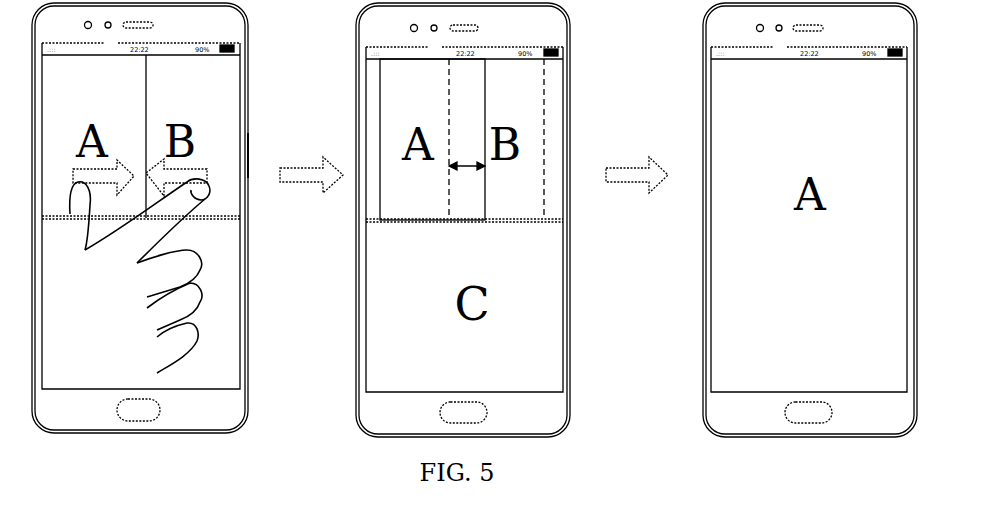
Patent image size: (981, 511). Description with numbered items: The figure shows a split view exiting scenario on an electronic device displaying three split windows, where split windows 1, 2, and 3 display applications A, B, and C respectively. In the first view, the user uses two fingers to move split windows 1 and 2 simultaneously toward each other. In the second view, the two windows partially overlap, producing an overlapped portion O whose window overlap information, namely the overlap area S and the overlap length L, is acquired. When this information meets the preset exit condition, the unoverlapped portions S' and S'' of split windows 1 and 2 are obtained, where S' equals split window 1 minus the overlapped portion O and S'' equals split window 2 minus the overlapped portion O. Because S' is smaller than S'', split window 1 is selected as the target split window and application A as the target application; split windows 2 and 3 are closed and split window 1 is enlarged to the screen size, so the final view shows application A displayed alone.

The split window 1 is at (245, 137).
The split window 2 is at (354, 135).
The split window 3 is at (302, 305).
The unoverlapped portion S' is at (384, 139).
The unoverlapped portion S'' is at (565, 139).
The overlapped portion O is at (467, 203).
The overlap length L is at (467, 155).
The overlap area S is at (467, 139).